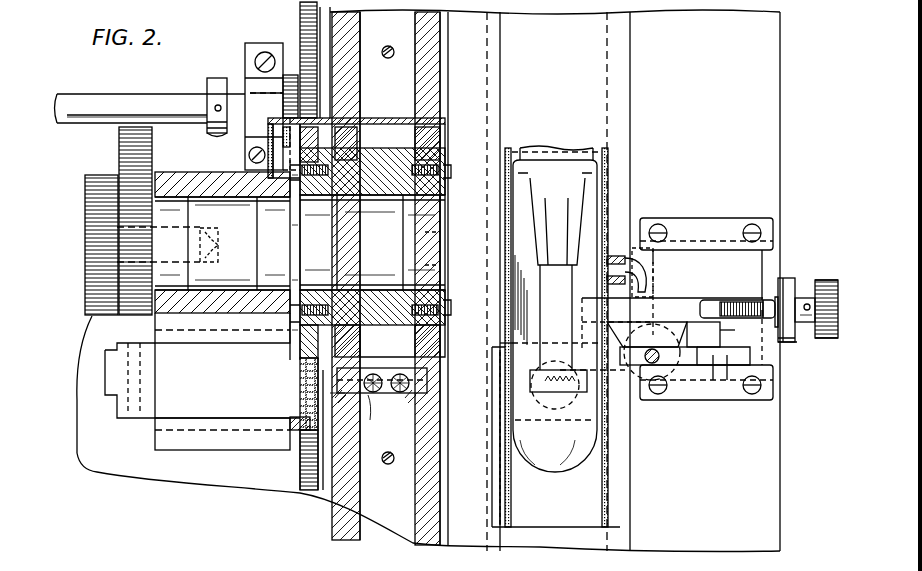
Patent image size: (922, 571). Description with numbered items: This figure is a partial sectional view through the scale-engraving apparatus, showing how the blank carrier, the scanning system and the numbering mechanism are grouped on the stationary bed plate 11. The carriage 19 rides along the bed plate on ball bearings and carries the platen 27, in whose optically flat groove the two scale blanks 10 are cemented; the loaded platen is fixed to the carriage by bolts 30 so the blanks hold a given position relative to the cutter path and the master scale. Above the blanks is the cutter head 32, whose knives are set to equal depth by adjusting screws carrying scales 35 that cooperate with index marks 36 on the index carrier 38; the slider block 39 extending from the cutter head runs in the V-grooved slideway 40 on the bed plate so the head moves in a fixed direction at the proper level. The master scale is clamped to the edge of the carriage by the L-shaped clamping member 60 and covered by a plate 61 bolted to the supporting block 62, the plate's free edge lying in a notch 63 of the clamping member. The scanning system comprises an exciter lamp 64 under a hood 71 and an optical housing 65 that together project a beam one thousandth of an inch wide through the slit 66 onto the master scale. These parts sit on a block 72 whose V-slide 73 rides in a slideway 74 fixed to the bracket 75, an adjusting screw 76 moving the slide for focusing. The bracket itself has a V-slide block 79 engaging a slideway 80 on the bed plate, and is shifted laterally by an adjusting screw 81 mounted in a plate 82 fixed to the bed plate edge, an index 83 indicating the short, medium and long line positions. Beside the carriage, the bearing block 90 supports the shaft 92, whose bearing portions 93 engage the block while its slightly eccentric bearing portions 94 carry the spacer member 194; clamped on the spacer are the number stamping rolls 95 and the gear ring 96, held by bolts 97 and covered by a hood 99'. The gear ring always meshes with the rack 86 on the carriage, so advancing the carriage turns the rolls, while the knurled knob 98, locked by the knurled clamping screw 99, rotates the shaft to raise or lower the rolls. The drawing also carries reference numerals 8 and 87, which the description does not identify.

The screw 8 is at (765, 393).
The scale blanks 10 is at (348, 497).
The stationary bed plate 11 is at (780, 498).
The carriage 19 is at (322, 492).
The platen 27 is at (392, 533).
The bolts 30 is at (391, 42).
The cutter head 32 is at (428, 375).
The scales 35 is at (387, 393).
The index marks 36 is at (368, 395).
The index carrier 38 is at (408, 395).
The slider block 39 is at (202, 380).
The V-grooved slideway 40 is at (215, 443).
The L-shaped clamping member 60 is at (462, 537).
The cover plate 61 is at (605, 88).
The supporting block 62 is at (630, 272).
The notch 63 is at (500, 108).
The exciter lamp 64 is at (556, 336).
The rectangular housing 65 is at (527, 382).
The slit 66 is at (533, 327).
The hood 71 is at (503, 321).
The block 72 is at (508, 357).
The V-slide 73 is at (670, 330).
The slideway 74 is at (720, 337).
The bracket 75 is at (724, 300).
The adjusting screw 76 is at (640, 377).
The V-slide block 79 is at (753, 263).
The slideway 80 is at (716, 228).
The adjusting screw 81 is at (823, 339).
The plate 82 is at (792, 344).
The index 83 is at (720, 376).
The rack 86 is at (300, 14).
The block 87 is at (287, 74).
The bearing block 90 is at (181, 193).
The shaft 92 is at (264, 242).
The bearing portions 93 is at (262, 197).
The bearing portions 94 is at (398, 196).
The number stamping rolls 95 is at (417, 134).
The gear ring 96 is at (302, 357).
The bolts 97 is at (448, 174).
The knurled knob 98 is at (121, 145).
The knurled clamping screw 99 is at (157, 243).
The hood 99' is at (387, 68).
The spacer member 194 is at (390, 322).